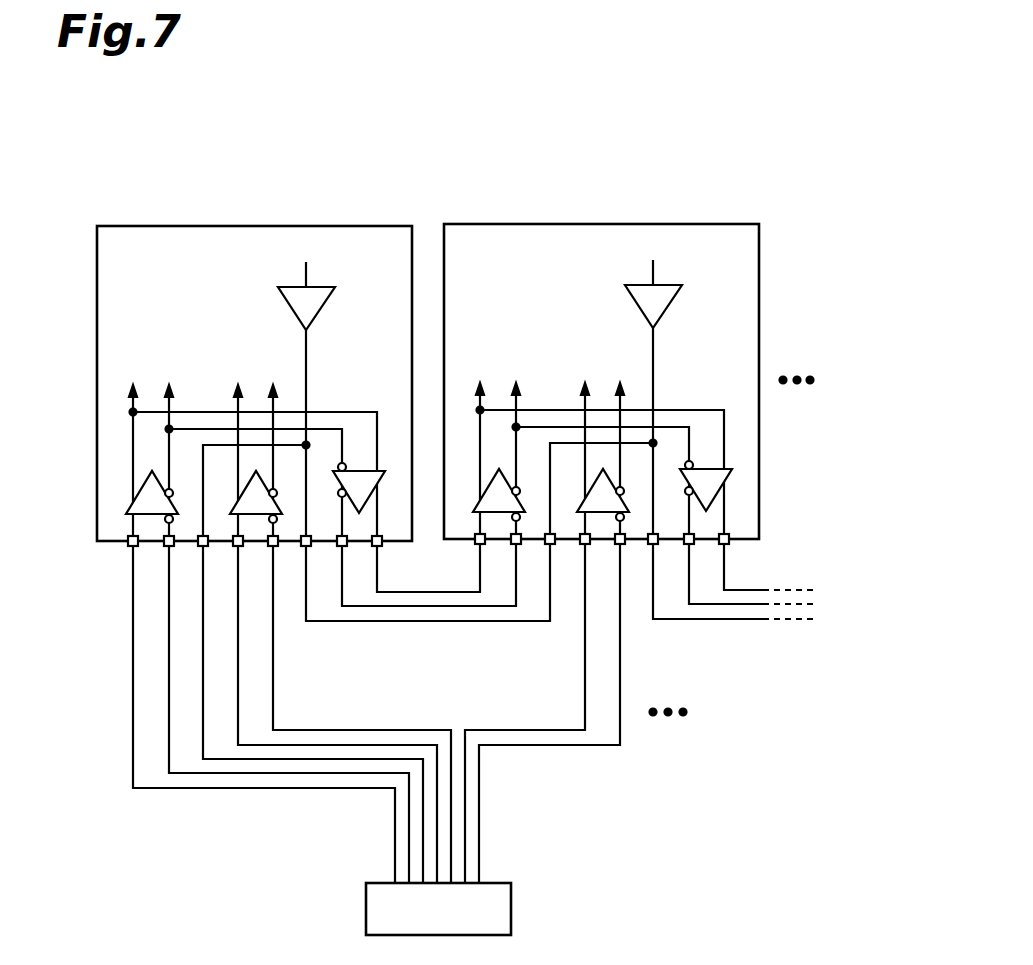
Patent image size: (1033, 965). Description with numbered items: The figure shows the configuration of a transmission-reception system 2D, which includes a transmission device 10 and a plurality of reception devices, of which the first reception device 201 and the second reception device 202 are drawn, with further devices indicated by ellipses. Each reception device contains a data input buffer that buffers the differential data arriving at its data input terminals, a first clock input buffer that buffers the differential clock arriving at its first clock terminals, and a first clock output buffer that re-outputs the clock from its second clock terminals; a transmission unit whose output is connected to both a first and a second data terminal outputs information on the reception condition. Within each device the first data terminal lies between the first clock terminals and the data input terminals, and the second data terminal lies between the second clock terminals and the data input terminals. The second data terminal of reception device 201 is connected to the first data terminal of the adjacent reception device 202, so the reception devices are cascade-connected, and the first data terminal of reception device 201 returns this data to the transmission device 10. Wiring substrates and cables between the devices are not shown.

The transmission-reception system 2D is at (702, 112).
The reception device 201 is at (348, 226).
The reception device 202 is at (601, 354).
The transmission device 10 is at (511, 905).